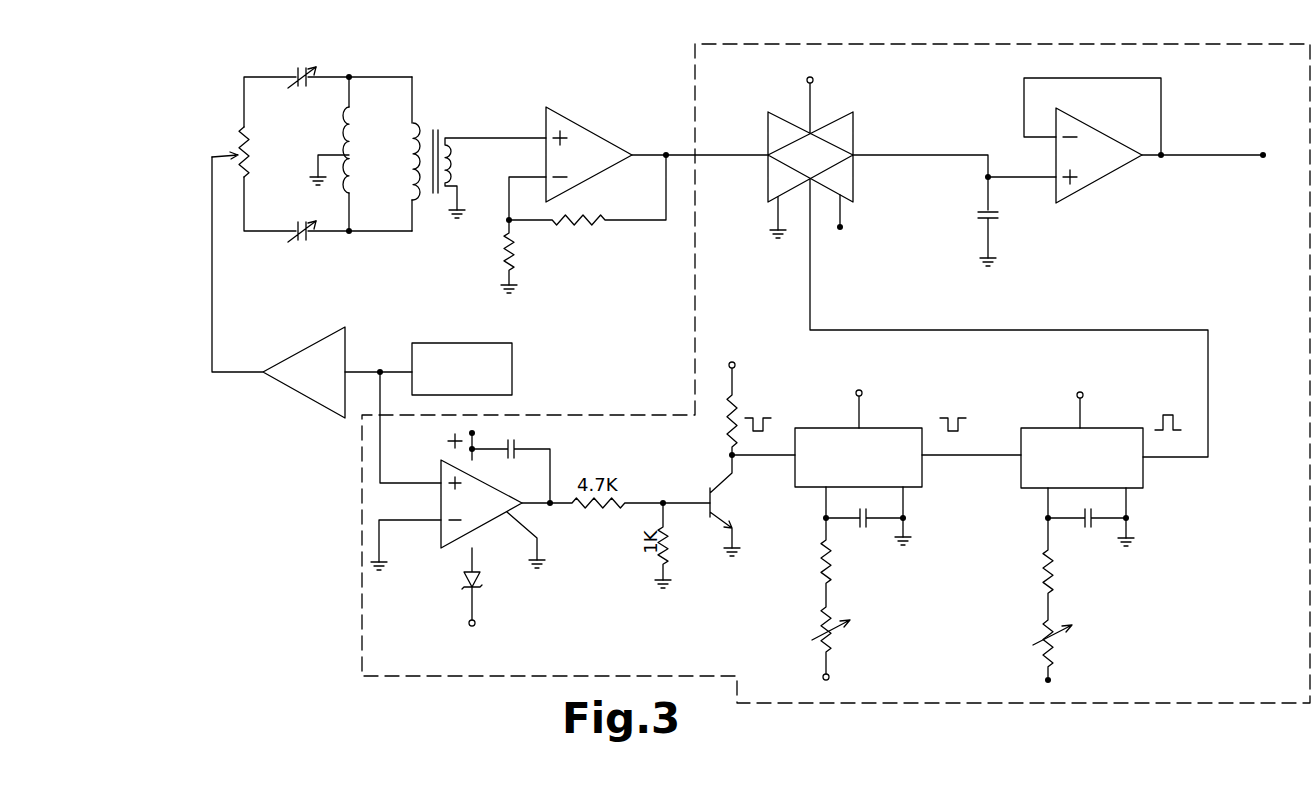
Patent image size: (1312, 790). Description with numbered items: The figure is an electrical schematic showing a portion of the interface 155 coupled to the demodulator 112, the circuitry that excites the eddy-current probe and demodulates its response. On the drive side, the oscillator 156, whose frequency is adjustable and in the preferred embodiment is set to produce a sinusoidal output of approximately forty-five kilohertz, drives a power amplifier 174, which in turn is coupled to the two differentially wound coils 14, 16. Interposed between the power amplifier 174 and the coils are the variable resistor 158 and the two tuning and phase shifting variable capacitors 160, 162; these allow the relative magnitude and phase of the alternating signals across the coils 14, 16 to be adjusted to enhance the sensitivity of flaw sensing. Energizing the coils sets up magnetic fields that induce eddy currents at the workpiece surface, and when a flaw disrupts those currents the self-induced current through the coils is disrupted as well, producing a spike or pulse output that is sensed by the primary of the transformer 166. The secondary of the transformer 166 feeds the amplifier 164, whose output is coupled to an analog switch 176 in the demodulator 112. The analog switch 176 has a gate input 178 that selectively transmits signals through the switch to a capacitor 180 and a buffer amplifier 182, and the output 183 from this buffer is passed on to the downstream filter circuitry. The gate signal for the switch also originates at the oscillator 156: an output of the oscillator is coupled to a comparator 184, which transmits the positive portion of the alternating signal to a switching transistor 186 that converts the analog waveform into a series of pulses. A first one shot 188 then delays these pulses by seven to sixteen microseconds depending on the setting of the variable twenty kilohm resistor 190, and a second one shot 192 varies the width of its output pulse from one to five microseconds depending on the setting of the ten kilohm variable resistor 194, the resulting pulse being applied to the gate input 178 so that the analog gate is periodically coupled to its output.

The differentially wound coil 14 is at (363, 178).
The differentially wound coil 16 is at (360, 122).
The demodulator 112 is at (1310, 222).
The interface 155 is at (510, 70).
The oscillator 156 is at (512, 354).
The variable resistor 158 is at (249, 150).
The tuning and phase shifting variable capacitor 160 is at (308, 240).
The tuning and phase shifting variable capacitor 162 is at (295, 72).
The amplifier 164 is at (582, 136).
The transformer 166 is at (434, 219).
The power amplifier 174 is at (310, 398).
The analog switch 176 is at (835, 117).
The gate input 178 is at (811, 300).
The capacitor 180 is at (985, 212).
The buffer amplifier 182 is at (1097, 165).
The output 183 is at (1210, 158).
The comparator 184 is at (493, 524).
The switching transistor 186 is at (722, 490).
The first one shot 188 is at (920, 478).
The variable 20 k resistor 190 is at (813, 634).
The second one shot 192 is at (1140, 475).
The 10 k variable resistor 194 is at (1040, 632).